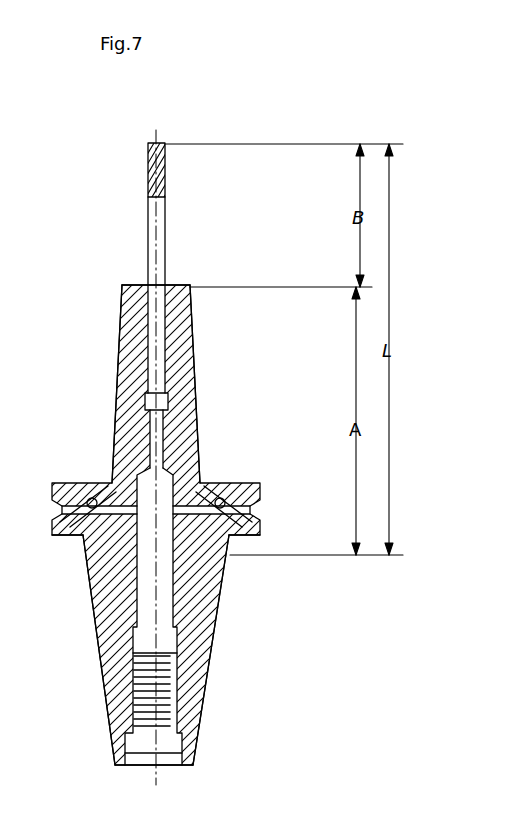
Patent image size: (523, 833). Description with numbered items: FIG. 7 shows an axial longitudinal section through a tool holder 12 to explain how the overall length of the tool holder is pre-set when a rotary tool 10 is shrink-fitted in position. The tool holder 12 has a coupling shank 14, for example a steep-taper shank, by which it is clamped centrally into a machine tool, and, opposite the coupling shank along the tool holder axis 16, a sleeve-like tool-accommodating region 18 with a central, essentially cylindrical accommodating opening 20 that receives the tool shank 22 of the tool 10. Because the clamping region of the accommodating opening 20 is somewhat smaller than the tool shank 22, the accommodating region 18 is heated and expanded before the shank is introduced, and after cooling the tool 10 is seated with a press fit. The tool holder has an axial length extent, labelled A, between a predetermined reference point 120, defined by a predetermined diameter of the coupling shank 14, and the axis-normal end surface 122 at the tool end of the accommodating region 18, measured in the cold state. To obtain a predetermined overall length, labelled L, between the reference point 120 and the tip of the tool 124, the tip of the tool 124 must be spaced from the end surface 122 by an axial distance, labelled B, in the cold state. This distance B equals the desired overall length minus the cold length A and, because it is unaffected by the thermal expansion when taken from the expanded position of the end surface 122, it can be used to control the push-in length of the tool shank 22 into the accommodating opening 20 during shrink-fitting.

The rotary tool 10 is at (144, 282).
The tool holder 12 is at (255, 453).
The coupling shank 14 is at (108, 672).
The tool holder axis 16 is at (165, 598).
The tool-accommodating region 18 is at (120, 406).
The accommodating opening 20 is at (152, 316).
The tool shank 22 is at (167, 218).
The reference point 120 is at (232, 556).
The end surface 122 is at (176, 287).
The tip of the tool 124 is at (147, 142).